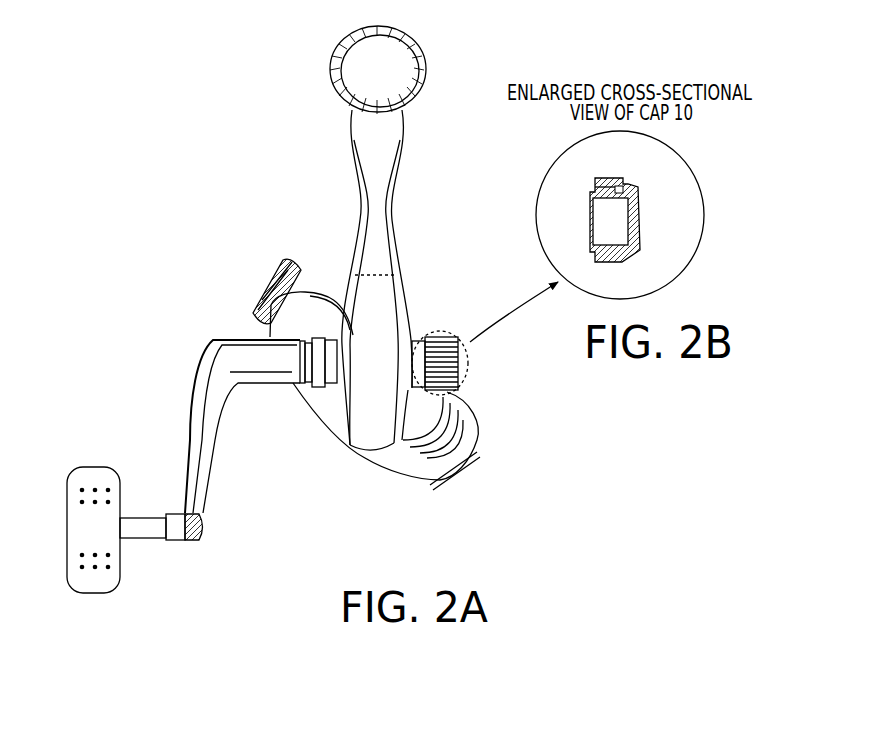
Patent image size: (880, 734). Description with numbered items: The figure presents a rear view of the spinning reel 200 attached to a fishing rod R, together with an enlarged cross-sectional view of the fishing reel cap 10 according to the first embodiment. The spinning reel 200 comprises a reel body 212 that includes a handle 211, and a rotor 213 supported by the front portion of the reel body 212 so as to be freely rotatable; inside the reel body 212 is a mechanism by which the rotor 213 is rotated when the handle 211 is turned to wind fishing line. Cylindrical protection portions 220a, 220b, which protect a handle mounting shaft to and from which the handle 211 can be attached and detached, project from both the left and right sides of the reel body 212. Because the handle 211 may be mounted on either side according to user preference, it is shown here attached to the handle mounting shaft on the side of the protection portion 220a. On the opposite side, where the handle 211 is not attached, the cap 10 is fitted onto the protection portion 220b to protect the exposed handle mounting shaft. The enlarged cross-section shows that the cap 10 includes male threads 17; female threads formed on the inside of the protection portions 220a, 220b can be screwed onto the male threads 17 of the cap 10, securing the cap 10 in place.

In FIG. 2A, the spinning reel 200 is at (178, 260).
In FIG. 2A, the fishing rod R is at (425, 77).
In FIG. 2A, the handle 211 is at (183, 470).
In FIG. 2A, the reel body 212 is at (395, 263).
In FIG. 2A, the rotor 213 is at (401, 477).
In FIG. 2A, the protection portion 220a is at (333, 390).
In FIG. 2A, the protection portion 220b is at (415, 345).
In FIG. 2A, the cap 10 is at (462, 360).
In FIG. 2B, the cap 10 is at (643, 208).
In FIG. 2B, the male threads 17 is at (597, 190).